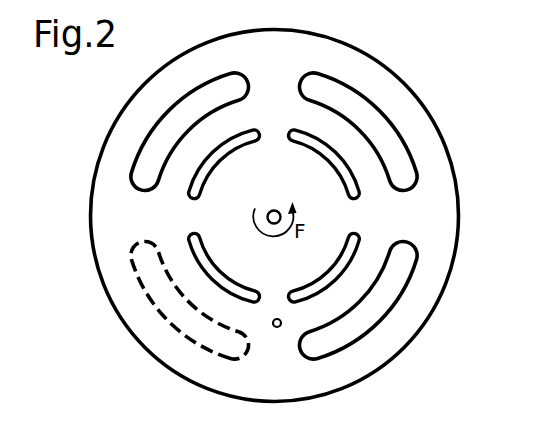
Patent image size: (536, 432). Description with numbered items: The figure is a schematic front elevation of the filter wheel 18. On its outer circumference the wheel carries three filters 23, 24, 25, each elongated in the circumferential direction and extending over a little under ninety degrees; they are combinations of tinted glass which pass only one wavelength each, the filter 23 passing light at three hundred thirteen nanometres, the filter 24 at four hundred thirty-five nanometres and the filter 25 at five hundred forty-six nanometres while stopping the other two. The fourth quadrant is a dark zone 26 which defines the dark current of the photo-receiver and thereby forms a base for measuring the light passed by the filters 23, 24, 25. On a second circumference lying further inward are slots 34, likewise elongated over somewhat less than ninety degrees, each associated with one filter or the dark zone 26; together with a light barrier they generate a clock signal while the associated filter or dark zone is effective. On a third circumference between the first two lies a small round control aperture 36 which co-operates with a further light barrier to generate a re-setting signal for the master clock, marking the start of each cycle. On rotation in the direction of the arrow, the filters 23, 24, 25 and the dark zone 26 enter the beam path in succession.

The filter wheel 18 is at (458, 195).
The filter 23 is at (397, 290).
The filter 24 is at (389, 136).
The filter 25 is at (150, 147).
The dark zone 26 is at (153, 304).
The slots 34 is at (289, 132).
The control aperture 36 is at (279, 328).